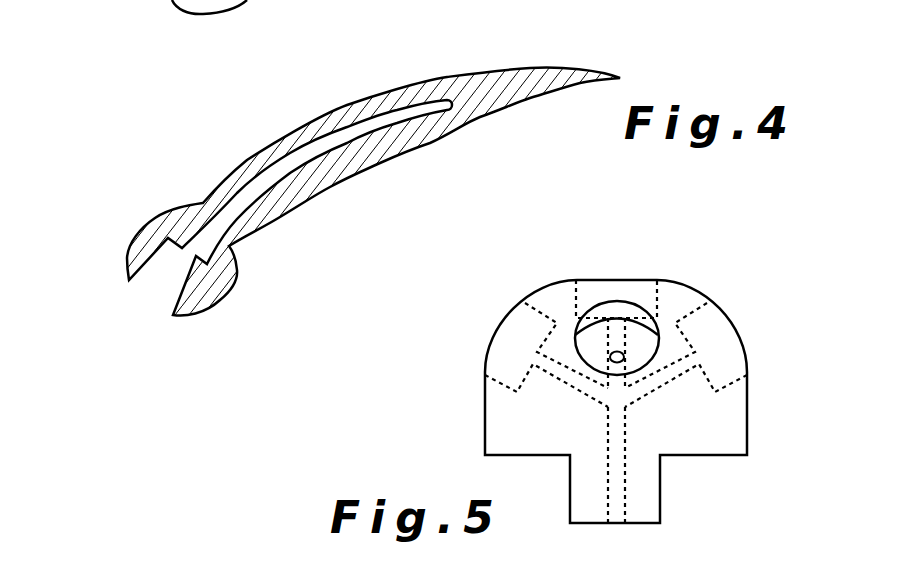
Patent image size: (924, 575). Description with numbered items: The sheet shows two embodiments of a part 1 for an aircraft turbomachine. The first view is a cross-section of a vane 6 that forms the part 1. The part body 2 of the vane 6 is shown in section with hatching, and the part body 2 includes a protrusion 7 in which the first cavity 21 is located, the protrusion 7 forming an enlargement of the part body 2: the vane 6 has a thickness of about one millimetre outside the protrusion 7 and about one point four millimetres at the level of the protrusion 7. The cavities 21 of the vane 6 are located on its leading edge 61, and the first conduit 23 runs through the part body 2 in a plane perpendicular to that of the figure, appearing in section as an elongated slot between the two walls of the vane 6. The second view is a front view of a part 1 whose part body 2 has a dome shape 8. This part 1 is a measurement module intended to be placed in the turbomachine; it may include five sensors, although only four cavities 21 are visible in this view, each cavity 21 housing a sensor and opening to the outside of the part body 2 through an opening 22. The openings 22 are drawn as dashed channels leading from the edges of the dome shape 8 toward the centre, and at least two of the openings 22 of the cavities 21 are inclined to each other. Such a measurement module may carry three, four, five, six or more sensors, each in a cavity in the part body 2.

In FIG. 4, the part 1 is at (389, 91).
In FIG. 5, the part 1 is at (778, 291).
In FIG. 4, the part body 2 is at (498, 99).
In FIG. 5, the part body 2 is at (521, 287).
In FIG. 4, the vane 6 is at (583, 69).
In FIG. 4, the protrusion 7 is at (138, 202).
In FIG. 5, the dome shape 8 is at (710, 288).
In FIG. 4, the cavity 21 is at (167, 273).
In FIG. 5, the opening 22 is at (619, 273).
In FIG. 4, the first conduit 23 is at (292, 175).
In FIG. 4, the leading edge 61 is at (123, 278).